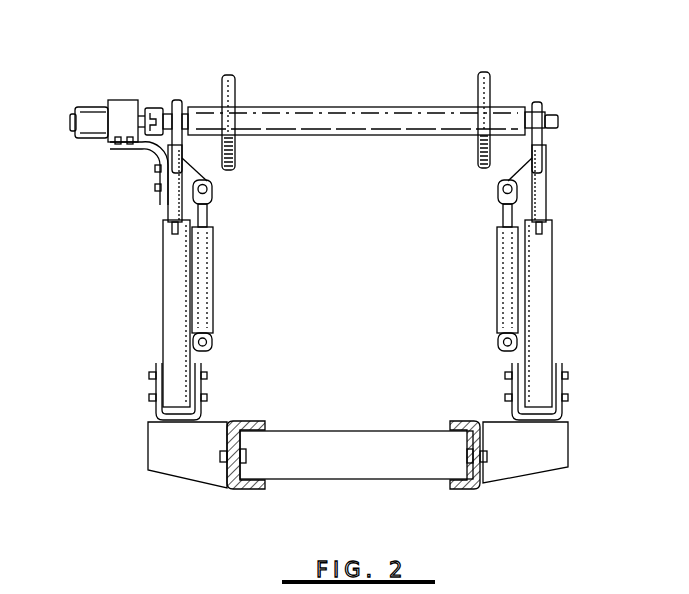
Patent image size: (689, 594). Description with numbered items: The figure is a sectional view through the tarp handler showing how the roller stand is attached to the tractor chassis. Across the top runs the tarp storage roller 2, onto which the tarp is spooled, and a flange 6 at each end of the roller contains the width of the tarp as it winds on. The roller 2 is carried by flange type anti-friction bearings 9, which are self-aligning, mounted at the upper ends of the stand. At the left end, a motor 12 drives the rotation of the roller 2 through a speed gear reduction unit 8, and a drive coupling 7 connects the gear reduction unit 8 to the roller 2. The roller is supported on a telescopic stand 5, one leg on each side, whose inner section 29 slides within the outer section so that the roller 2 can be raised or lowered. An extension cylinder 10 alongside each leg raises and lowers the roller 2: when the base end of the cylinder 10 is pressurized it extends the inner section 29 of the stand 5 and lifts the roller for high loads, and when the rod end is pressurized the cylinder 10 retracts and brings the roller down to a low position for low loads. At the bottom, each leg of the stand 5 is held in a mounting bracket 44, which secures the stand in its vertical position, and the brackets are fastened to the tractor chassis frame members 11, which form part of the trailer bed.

The tarp storage roller 2 is at (326, 104).
The telescopic stand 5 is at (172, 295).
The flange 6 is at (229, 78).
The drive coupling 7 is at (152, 110).
The speed gear reduction unit 8 is at (125, 112).
The flange type anti-friction bearings 9 is at (175, 100).
The extension cylinder 10 is at (201, 265).
The tractor chassis frame members 11 is at (340, 471).
The motor 12 is at (81, 114).
The inner section 29 is at (176, 206).
The mounting bracket 44 is at (152, 365).